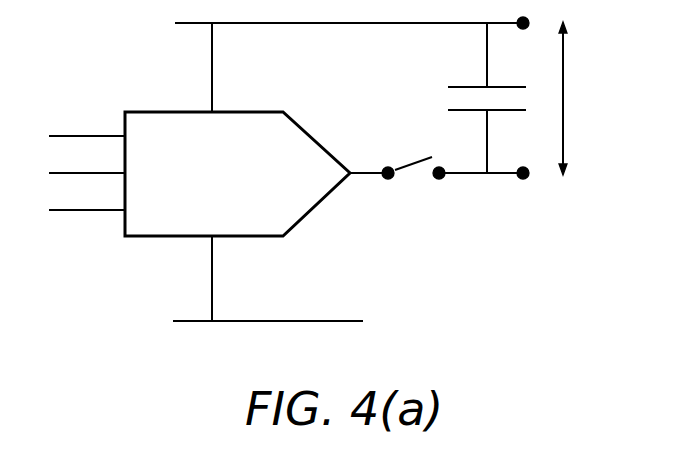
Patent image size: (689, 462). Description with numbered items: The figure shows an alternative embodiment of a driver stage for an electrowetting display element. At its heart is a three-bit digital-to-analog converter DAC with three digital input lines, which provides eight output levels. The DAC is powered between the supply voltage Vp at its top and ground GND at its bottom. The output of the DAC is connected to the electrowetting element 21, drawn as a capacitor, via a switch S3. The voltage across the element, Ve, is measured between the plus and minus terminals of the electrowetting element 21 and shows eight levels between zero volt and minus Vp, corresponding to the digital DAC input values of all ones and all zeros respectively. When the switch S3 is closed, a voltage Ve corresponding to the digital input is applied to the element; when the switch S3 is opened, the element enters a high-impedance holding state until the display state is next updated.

The electrowetting element 21 is at (473, 86).
The switch S3 is at (439, 154).
The digital-to-analog converter DAC is at (199, 174).
The supply voltage Vp is at (332, 61).
The ground GND is at (236, 285).
The voltage across the element Ve is at (564, 98).